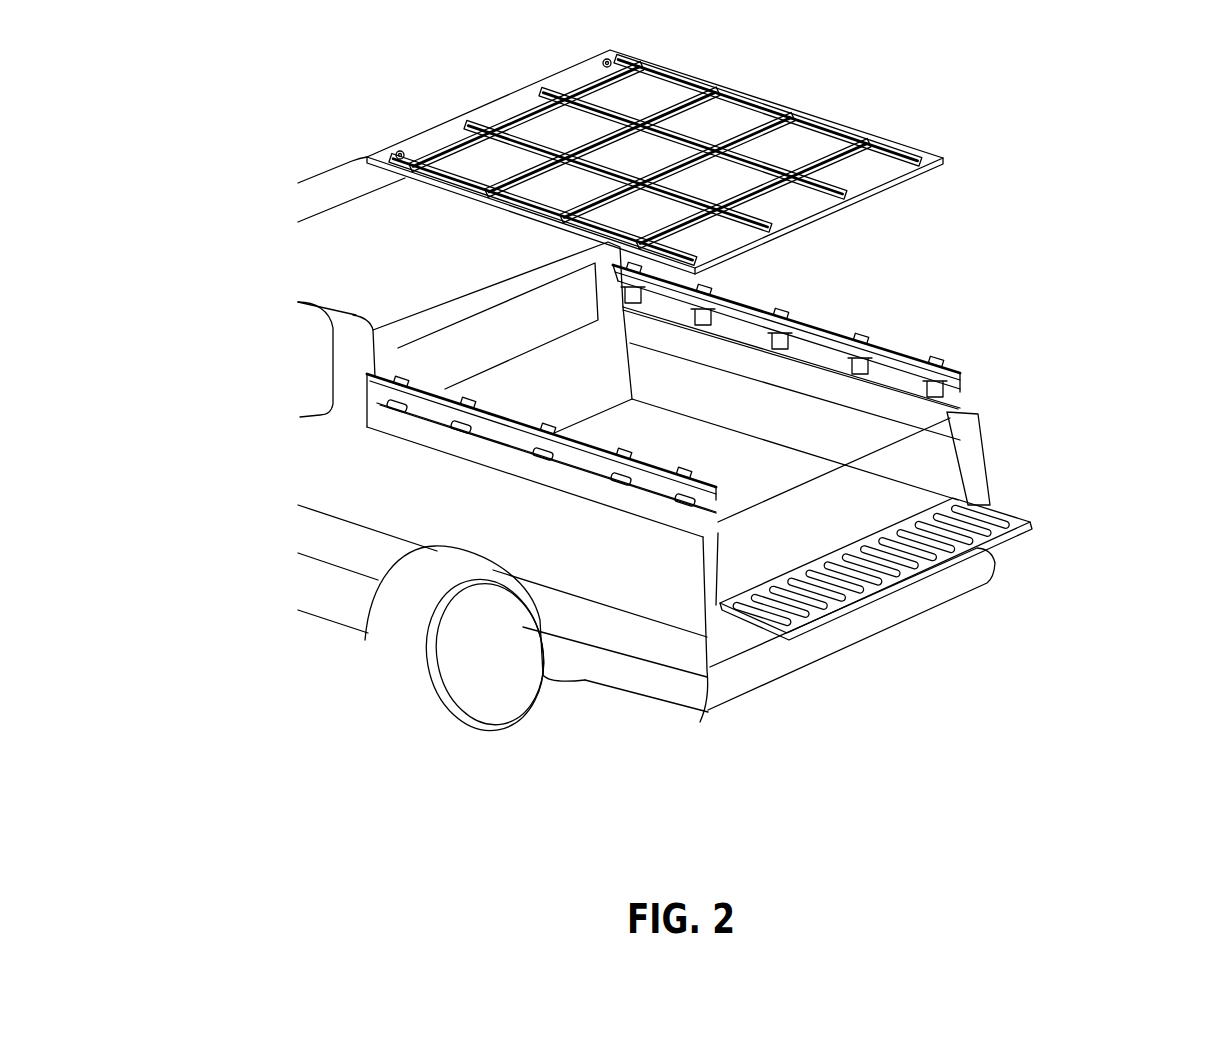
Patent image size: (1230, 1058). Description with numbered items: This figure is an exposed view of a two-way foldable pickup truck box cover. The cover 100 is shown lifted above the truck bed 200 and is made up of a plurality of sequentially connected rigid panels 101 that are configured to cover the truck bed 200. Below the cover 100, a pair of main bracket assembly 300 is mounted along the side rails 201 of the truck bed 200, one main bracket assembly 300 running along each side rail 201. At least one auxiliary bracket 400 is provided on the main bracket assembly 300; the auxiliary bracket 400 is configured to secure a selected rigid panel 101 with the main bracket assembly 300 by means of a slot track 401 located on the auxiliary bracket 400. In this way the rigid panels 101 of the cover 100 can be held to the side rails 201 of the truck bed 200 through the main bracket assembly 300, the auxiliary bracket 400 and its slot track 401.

The cover 100 is at (771, 155).
The rigid panels 101 is at (867, 177).
The truck bed 200 is at (673, 570).
The side rails 201 is at (523, 472).
The main bracket assembly 300 is at (422, 398).
The auxiliary bracket 400 is at (960, 383).
The slot track 401 is at (925, 378).